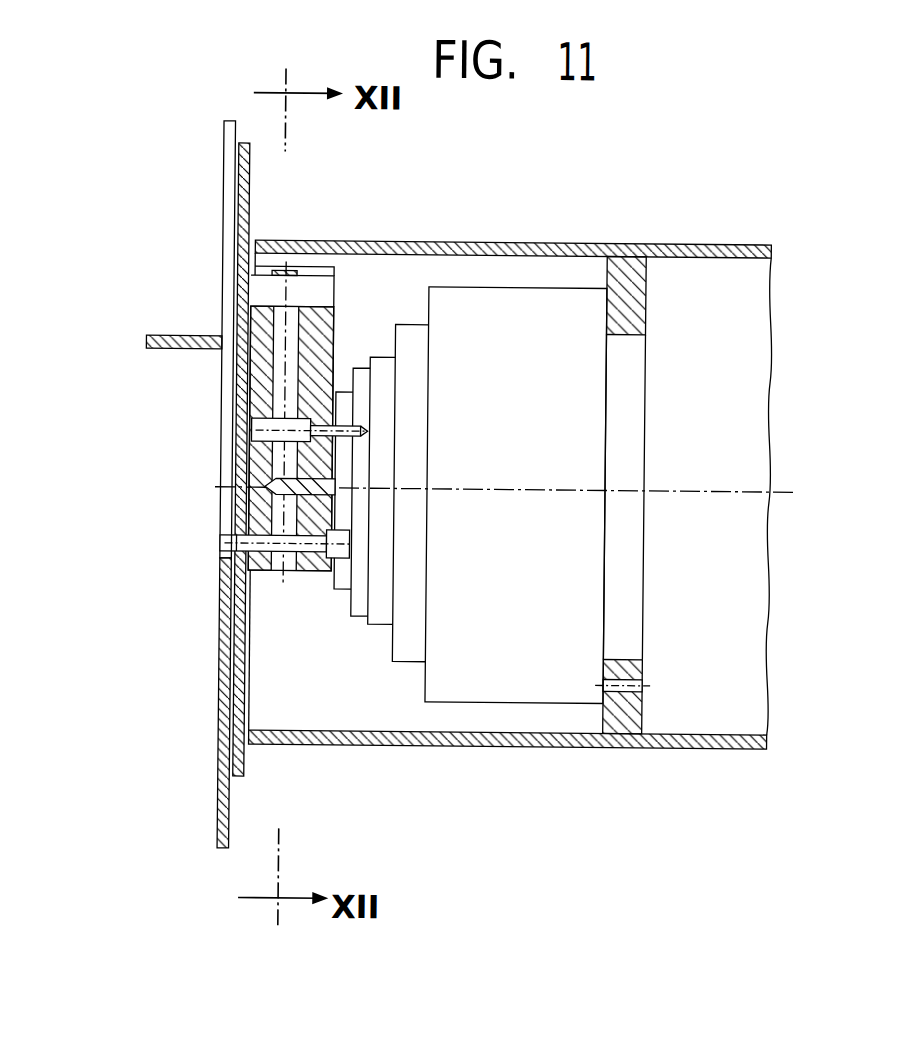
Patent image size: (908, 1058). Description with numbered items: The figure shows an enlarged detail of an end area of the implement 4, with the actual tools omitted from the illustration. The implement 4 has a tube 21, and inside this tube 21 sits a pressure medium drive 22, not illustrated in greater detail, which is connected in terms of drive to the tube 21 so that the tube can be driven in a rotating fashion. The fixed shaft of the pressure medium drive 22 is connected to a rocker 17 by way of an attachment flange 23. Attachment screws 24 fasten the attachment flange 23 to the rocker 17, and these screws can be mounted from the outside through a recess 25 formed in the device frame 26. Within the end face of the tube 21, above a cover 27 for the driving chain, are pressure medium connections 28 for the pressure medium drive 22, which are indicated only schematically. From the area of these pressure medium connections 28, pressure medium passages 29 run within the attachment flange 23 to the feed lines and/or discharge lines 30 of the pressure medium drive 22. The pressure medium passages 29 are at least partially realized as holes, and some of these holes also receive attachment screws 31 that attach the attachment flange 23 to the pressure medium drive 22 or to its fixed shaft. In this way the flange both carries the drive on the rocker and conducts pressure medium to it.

The implement 4 is at (545, 236).
The rocker 17 is at (248, 764).
The tube 21 is at (700, 242).
The pressure medium drive 22 is at (497, 318).
The attachment flange 23 is at (316, 338).
The attachment screws 24 is at (285, 575).
The recess 25 is at (220, 515).
The device frame 26 is at (220, 754).
The cover 27 is at (174, 336).
The pressure medium connections 28 is at (247, 276).
The pressure medium passages 29 is at (285, 308).
The feed lines and/or discharge lines 30 is at (335, 497).
The attachment screws 31 is at (335, 357).